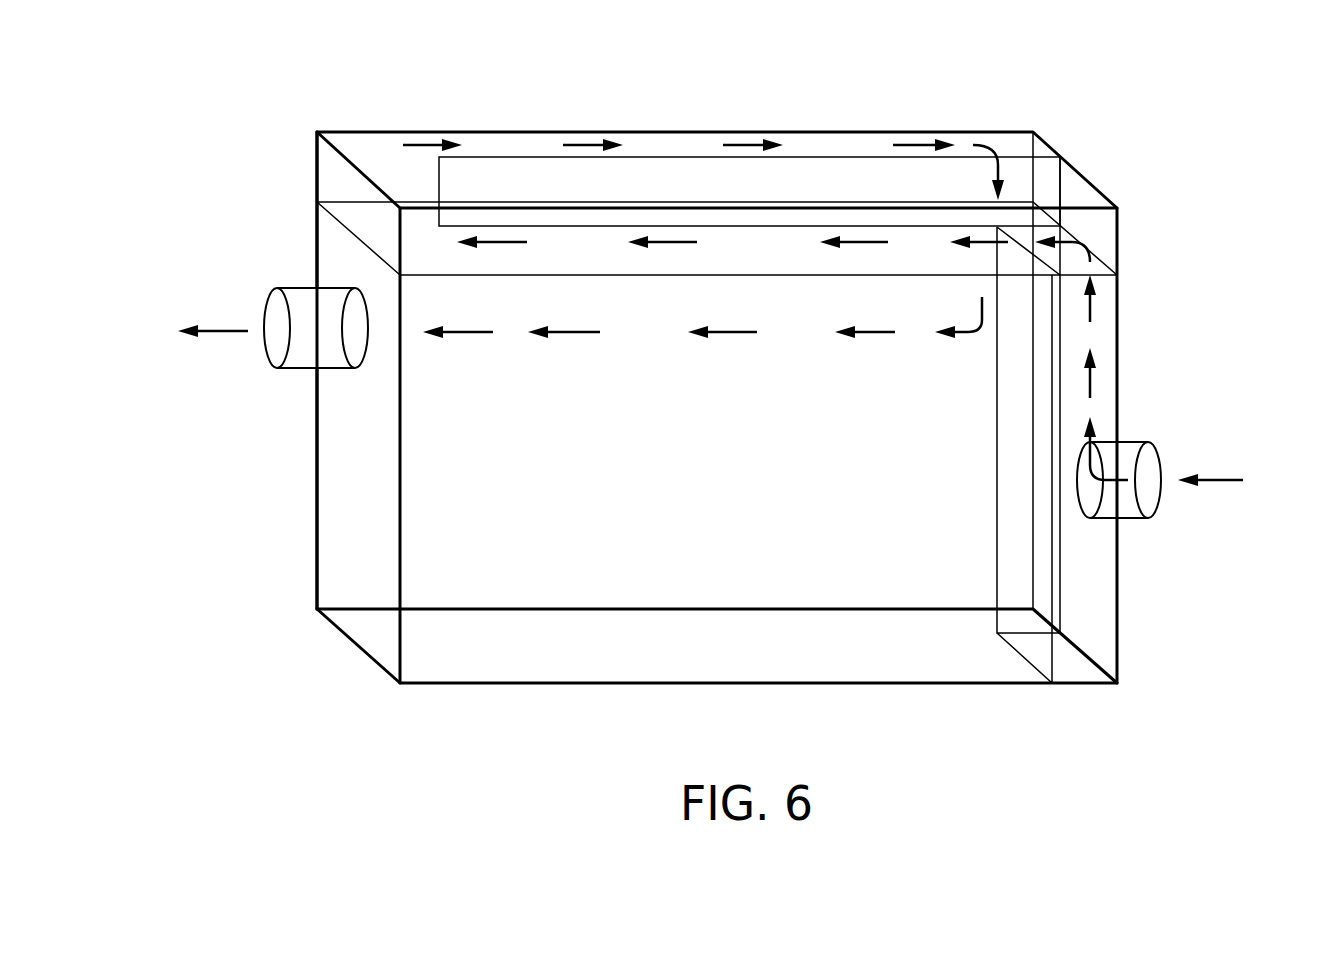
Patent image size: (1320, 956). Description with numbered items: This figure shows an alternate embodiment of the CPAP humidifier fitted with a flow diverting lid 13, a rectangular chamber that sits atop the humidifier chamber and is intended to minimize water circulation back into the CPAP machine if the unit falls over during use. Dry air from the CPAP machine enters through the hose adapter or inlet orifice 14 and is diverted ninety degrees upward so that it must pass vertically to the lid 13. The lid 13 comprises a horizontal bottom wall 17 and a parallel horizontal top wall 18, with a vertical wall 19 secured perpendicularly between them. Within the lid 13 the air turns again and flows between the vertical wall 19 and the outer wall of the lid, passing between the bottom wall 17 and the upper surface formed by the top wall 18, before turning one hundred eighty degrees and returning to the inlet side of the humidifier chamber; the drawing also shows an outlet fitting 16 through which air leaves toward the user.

The flow diverting lid 13 is at (294, 161).
The inlet orifice 14 is at (1163, 453).
The outlet pipe 16 is at (275, 344).
The horizontal bottom wall 17 is at (795, 275).
The horizontal top wall 18 is at (842, 147).
The vertical wall 19 is at (510, 173).